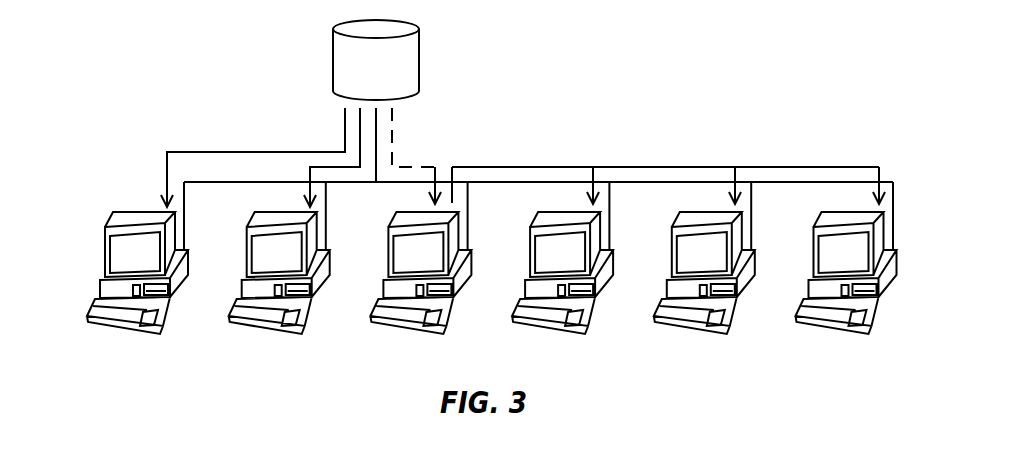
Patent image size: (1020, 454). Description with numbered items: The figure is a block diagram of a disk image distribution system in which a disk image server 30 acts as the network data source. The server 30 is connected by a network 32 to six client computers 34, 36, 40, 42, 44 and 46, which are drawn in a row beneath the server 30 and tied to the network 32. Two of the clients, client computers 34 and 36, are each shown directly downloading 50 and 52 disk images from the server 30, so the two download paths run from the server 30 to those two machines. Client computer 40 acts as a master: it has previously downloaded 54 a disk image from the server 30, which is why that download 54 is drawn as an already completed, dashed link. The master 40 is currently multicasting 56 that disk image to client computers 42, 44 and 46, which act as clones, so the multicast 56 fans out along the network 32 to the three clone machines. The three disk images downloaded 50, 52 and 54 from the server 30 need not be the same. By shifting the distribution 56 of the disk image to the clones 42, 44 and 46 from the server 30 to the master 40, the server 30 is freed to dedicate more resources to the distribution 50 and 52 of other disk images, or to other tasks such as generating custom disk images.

The disk image server 30 is at (420, 58).
The network 32 is at (895, 208).
The client computer 34 is at (123, 332).
The client computer 36 is at (265, 332).
The client computer 40 is at (406, 332).
The client computer 42 is at (548, 332).
The client computer 44 is at (690, 332).
The client computer 46 is at (832, 332).
The downloading 50 is at (233, 151).
The downloading 52 is at (334, 167).
The downloading 54 is at (398, 133).
The multicasting 56 is at (668, 166).